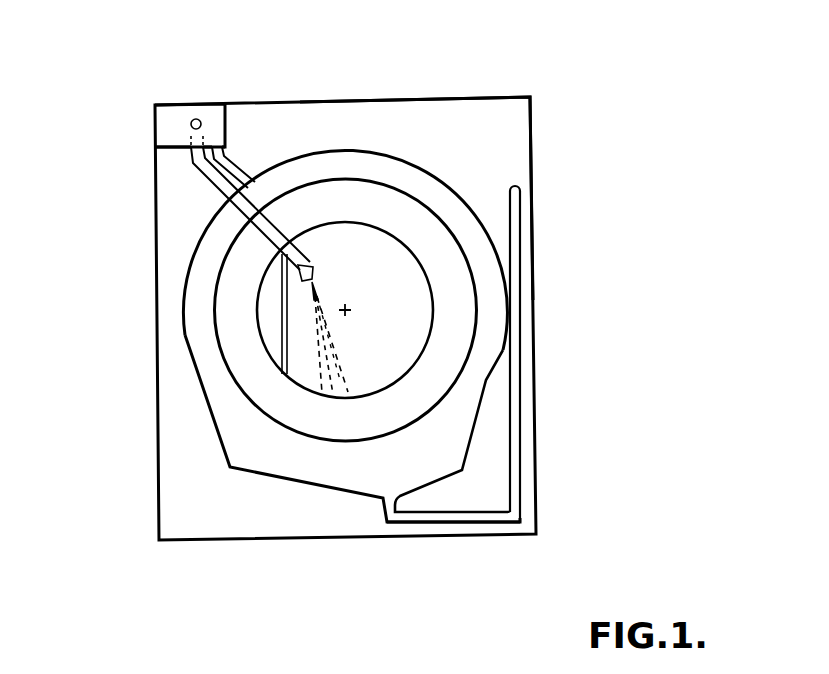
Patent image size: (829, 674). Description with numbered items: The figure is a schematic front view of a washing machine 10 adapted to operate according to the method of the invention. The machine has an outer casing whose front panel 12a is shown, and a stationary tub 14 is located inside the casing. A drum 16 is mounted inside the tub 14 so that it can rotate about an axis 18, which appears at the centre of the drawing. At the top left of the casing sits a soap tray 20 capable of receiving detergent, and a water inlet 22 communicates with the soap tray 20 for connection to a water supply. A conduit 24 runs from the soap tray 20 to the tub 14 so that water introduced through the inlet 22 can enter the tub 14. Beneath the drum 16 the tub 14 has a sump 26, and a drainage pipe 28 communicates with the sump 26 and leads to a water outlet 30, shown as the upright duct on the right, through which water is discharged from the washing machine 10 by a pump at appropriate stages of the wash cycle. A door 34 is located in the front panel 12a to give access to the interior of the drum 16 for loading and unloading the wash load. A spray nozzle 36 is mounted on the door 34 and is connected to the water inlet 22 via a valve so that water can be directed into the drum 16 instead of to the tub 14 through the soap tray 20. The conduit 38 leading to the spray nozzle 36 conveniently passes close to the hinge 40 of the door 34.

The washing machine 10 is at (542, 458).
The front panel 12a is at (500, 113).
The tub 14 is at (355, 151).
The drum 16 is at (233, 386).
The axis 18 is at (350, 310).
The soap tray 20 is at (166, 127).
The water inlet 22 is at (206, 121).
The conduit 24 is at (240, 170).
The sump 26 is at (310, 475).
The drainage pipe 28 is at (437, 523).
The water outlet 30 is at (513, 242).
The door 34 is at (433, 346).
The spray nozzle 36 is at (316, 272).
The conduit 38 is at (217, 195).
The hinge 40 is at (283, 318).